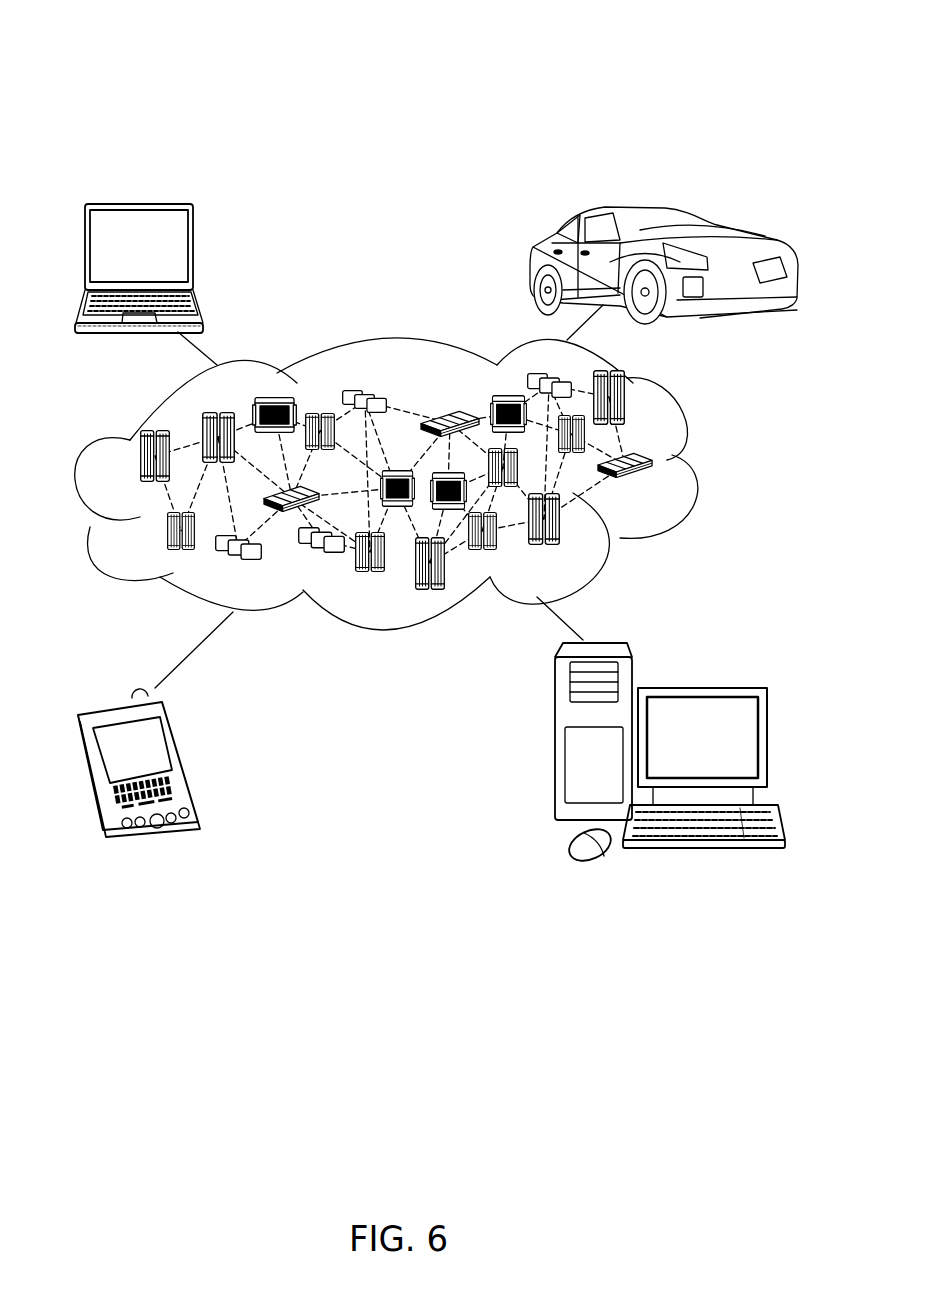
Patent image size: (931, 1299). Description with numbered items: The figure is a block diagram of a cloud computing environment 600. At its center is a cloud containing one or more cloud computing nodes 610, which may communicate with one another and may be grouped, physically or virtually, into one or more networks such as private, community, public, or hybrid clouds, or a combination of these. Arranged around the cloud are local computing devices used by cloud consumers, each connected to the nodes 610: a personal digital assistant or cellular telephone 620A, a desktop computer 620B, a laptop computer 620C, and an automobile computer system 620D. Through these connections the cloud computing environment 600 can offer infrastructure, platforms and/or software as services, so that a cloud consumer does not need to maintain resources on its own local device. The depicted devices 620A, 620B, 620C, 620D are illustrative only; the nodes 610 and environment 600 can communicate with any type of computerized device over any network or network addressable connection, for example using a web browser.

The cloud computing environment 600 is at (328, 55).
The cloud computing nodes 610 is at (664, 490).
The personal digital assistant (PDA) or cellular telephone 620A is at (180, 760).
The desktop computer 620B is at (700, 687).
The laptop computer 620C is at (193, 252).
The automobile computer system 620D is at (532, 266).